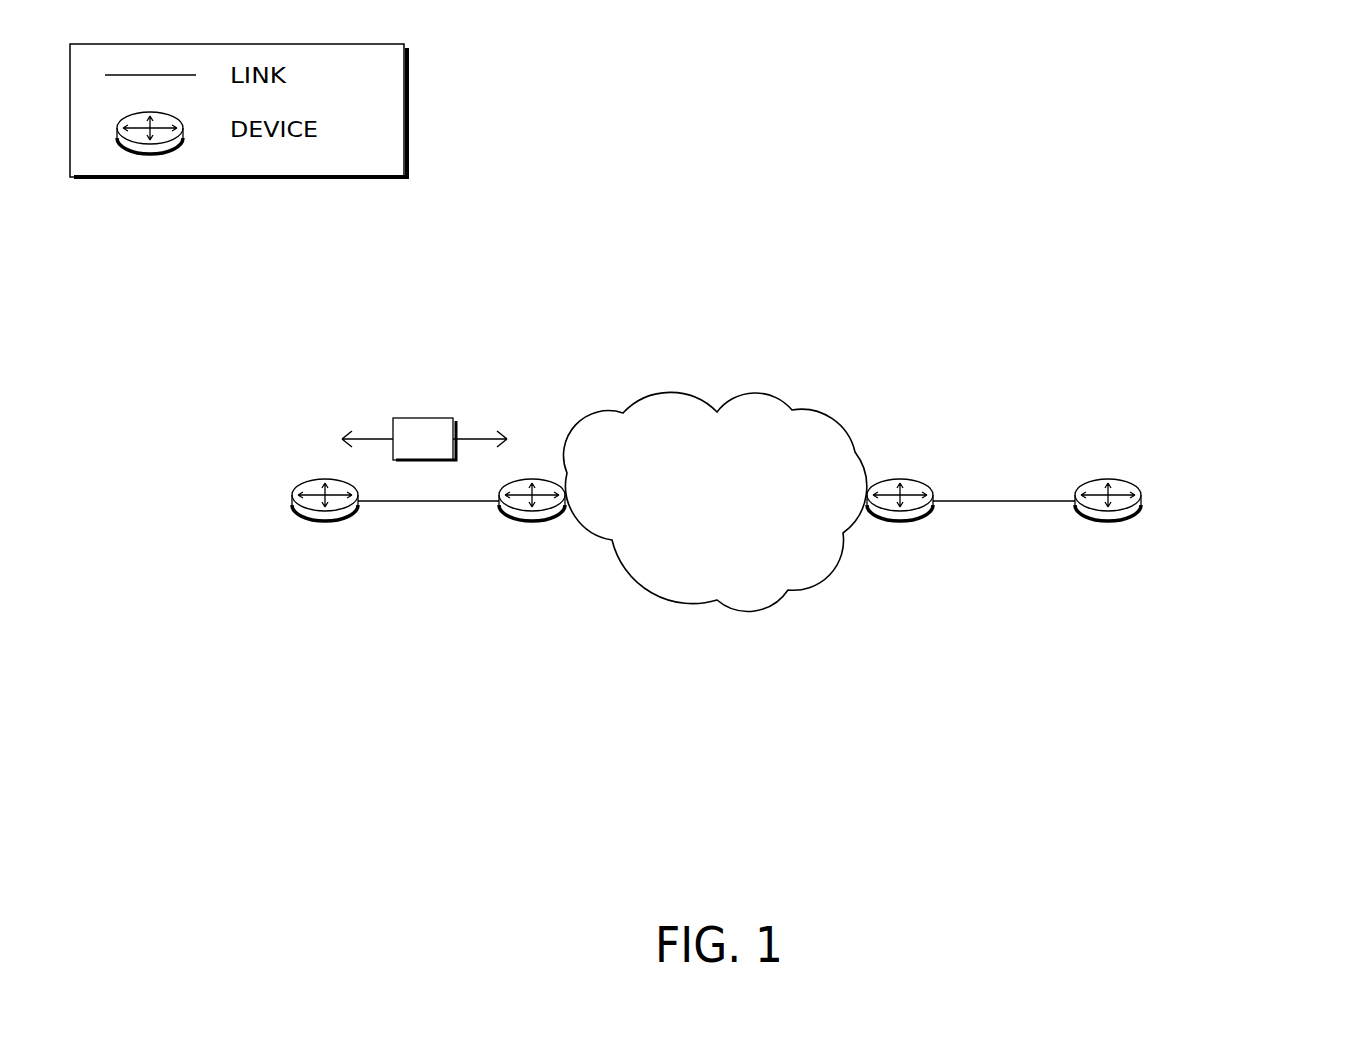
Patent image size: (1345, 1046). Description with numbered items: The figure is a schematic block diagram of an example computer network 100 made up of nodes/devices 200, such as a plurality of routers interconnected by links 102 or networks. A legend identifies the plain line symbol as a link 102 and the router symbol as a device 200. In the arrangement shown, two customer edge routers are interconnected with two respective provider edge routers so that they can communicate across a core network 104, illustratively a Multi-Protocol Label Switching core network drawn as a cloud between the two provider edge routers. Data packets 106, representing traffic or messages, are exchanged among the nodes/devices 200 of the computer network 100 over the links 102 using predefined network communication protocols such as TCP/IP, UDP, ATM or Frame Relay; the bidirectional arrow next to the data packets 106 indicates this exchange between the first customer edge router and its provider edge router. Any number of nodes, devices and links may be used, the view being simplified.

The computer network 100 is at (1269, 105).
The links 102 is at (590, 282).
The core network 104 is at (697, 537).
The data packets 106 is at (405, 453).
The nodes/devices 200 is at (241, 133).